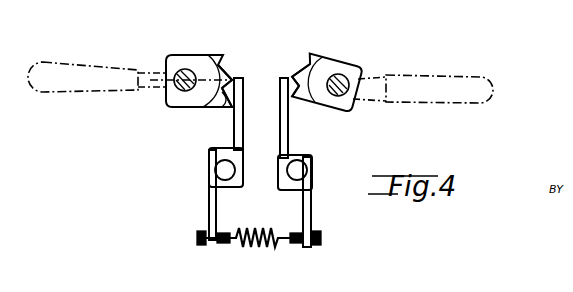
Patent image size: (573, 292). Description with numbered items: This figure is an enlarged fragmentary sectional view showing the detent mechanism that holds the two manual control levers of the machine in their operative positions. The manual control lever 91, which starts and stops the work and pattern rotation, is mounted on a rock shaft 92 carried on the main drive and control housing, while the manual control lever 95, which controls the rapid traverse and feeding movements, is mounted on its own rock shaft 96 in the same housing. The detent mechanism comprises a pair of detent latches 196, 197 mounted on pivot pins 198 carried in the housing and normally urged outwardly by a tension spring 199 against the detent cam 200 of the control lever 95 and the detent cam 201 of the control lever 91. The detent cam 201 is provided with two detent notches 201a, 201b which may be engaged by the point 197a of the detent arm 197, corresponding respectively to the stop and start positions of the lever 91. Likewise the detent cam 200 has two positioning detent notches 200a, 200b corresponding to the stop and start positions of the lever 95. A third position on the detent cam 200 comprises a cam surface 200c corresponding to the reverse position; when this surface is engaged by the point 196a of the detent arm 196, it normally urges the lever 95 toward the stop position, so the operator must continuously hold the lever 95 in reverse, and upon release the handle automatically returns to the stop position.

The manual control lever 91 is at (462, 79).
The rock shaft 92 is at (343, 80).
The manual control lever 95 is at (87, 72).
The rock shaft 96 is at (187, 70).
The detent latch 196 is at (210, 160).
The point of detent arm 196a is at (237, 85).
The detent latch 197 is at (281, 120).
The point of detent arm 197a is at (285, 80).
The pivot pin 198 is at (220, 170).
The tension spring 199 is at (254, 233).
The detent cam 200 is at (208, 58).
The detent notch 200a is at (213, 107).
The detent notch 200b is at (226, 76).
The cam surface 200c is at (218, 126).
The detent cam 201 is at (333, 76).
The detent notch 201a is at (305, 100).
The detent notch 201b is at (308, 60).